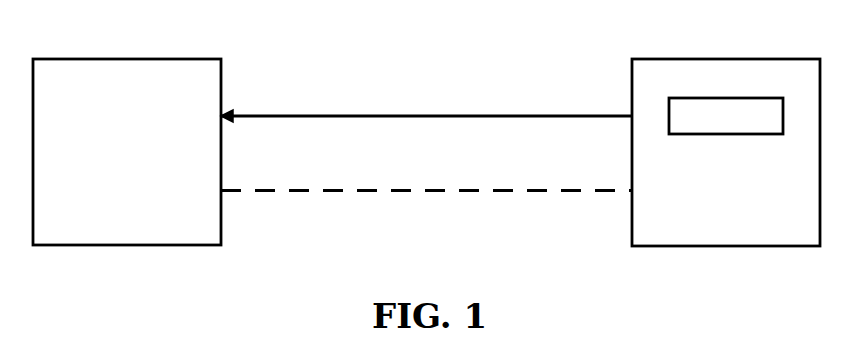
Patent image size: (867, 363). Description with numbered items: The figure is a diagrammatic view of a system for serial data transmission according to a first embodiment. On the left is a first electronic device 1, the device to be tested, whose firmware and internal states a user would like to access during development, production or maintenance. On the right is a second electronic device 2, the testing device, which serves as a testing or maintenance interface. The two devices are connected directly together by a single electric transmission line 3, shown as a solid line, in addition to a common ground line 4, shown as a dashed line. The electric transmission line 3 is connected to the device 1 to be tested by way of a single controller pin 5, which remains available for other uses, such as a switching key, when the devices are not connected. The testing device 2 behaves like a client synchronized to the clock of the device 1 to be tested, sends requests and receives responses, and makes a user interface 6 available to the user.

The first electronic device 1 is at (123, 59).
The second electronic device 2 is at (728, 59).
The electric transmission line 3 is at (389, 115).
The common ground line 4 is at (390, 192).
The controller pin 5 is at (226, 110).
The user interface 6 is at (730, 134).